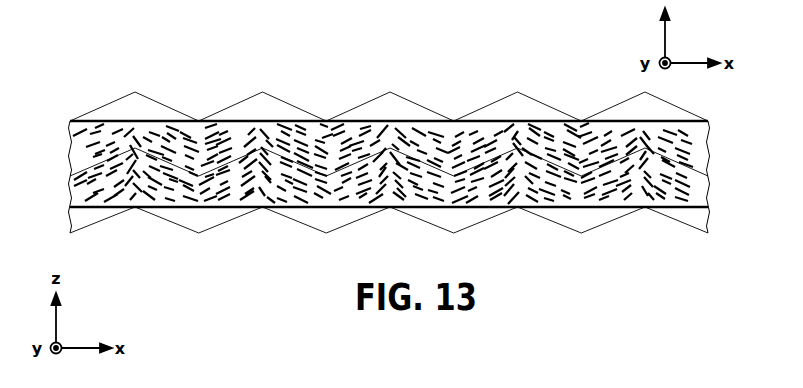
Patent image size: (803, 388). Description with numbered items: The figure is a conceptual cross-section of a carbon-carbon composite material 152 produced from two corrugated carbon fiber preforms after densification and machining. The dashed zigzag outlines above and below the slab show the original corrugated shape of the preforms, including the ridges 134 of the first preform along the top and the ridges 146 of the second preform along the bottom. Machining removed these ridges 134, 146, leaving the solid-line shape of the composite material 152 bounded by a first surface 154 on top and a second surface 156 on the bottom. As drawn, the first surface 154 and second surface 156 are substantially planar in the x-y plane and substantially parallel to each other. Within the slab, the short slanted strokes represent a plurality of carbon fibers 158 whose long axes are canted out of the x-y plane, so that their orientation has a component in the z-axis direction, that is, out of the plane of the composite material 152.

The ridges 134 is at (263, 92).
The ridges 146 is at (197, 233).
The carbon-carbon composite material 152 is at (703, 158).
The first surface 154 is at (167, 121).
The second surface 156 is at (162, 208).
The carbon fibers 158 is at (107, 135).